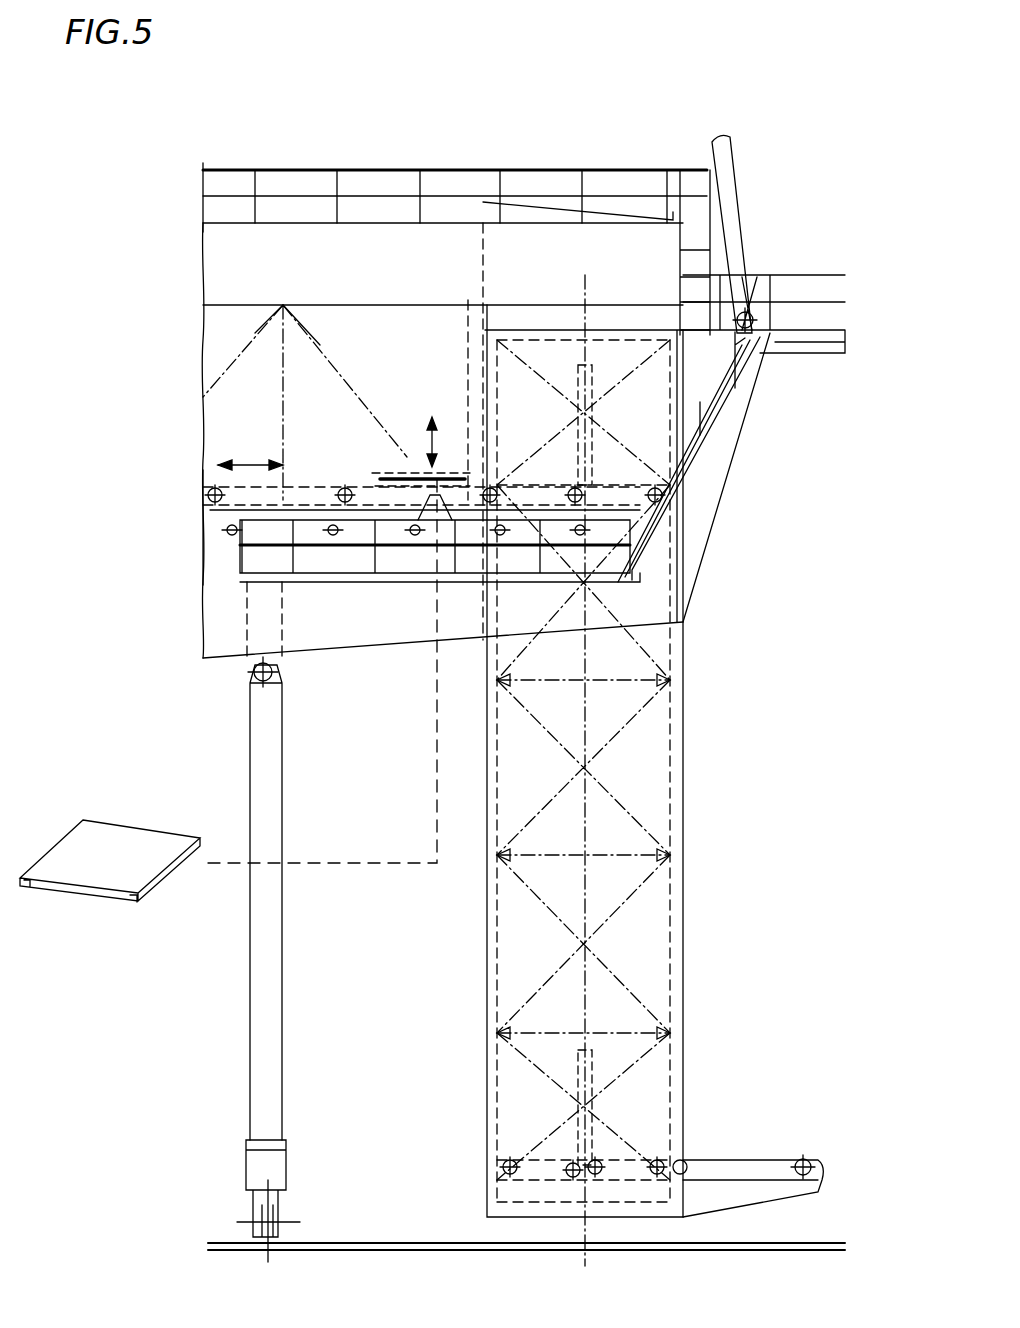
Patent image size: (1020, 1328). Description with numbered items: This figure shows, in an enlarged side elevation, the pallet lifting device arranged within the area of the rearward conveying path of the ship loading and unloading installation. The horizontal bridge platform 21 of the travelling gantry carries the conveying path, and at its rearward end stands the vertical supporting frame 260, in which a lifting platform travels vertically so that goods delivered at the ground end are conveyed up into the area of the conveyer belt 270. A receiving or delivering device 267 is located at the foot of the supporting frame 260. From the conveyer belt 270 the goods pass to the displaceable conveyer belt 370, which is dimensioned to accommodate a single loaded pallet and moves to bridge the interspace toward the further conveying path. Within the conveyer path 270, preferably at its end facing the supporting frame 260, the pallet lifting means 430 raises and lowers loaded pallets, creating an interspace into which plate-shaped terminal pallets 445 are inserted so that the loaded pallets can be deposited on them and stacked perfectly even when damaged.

The bridge platform 21 is at (230, 640).
The vertical supporting frame 260 is at (688, 910).
The lower roller conveyor 267 is at (632, 1165).
The conveyer belt 270 is at (398, 470).
The conveyer belt 370 is at (243, 465).
The pallet lifting means 430 is at (432, 500).
The terminal pallets 445 is at (118, 873).